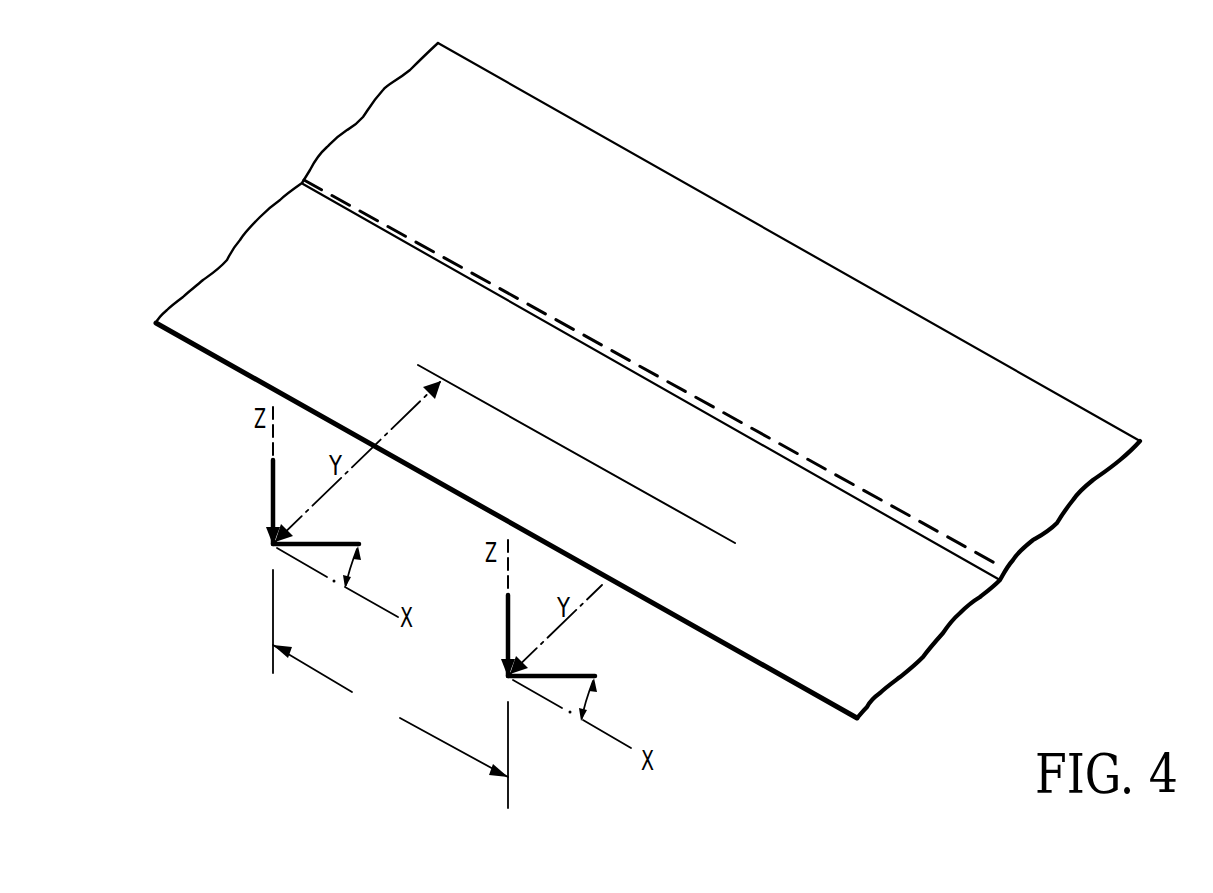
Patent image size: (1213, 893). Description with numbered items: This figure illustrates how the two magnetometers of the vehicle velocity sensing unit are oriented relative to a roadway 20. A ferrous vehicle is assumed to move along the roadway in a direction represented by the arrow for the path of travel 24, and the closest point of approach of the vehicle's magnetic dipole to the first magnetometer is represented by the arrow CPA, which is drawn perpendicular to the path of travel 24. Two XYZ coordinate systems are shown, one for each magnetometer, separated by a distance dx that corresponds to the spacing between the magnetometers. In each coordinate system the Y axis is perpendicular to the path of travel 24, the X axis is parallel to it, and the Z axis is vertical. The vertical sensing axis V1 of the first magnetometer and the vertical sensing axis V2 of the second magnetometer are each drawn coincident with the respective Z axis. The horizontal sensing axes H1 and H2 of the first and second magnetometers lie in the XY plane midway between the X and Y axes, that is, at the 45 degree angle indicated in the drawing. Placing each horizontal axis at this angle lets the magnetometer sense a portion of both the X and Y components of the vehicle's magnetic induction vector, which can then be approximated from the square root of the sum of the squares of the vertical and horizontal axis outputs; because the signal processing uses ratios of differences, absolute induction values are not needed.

The roadway 20 is at (187, 323).
The path of travel 24 is at (572, 448).
The 45° angle 45 is at (355, 570).
The vertical axis of first magnetometer V1 is at (271, 503).
The horizontal axis of first magnetometer H1 is at (320, 543).
The vertical axis of second magnetometer V2 is at (505, 625).
The horizontal axis of second magnetometer H2 is at (562, 676).
The closest point of approach CPA is at (400, 412).
The distance between magnetometers dx is at (390, 689).